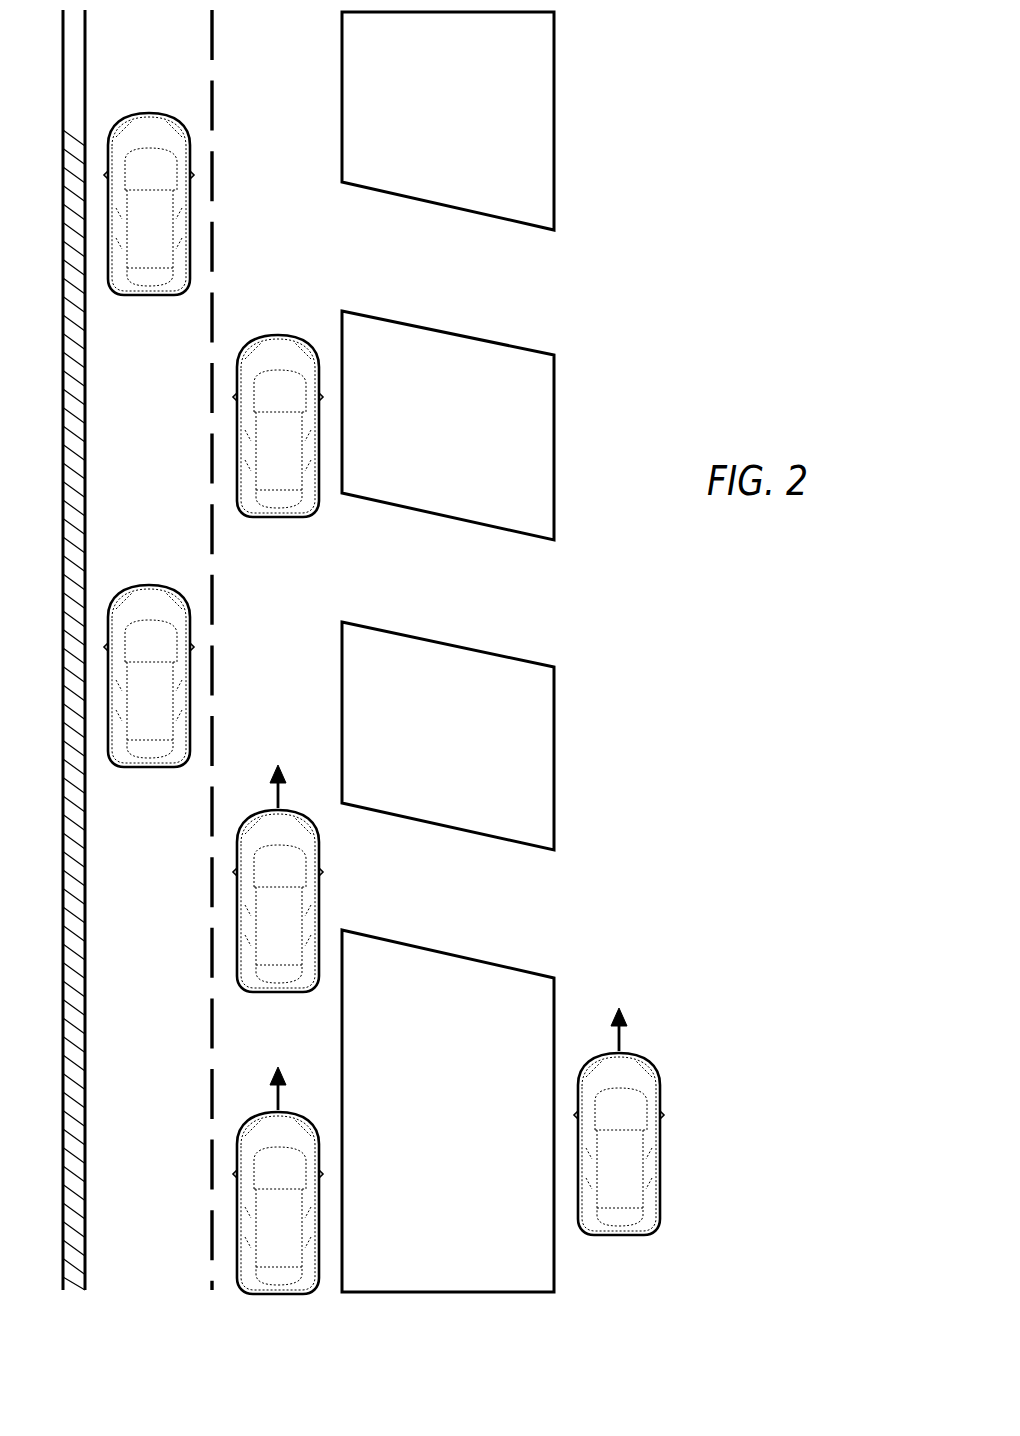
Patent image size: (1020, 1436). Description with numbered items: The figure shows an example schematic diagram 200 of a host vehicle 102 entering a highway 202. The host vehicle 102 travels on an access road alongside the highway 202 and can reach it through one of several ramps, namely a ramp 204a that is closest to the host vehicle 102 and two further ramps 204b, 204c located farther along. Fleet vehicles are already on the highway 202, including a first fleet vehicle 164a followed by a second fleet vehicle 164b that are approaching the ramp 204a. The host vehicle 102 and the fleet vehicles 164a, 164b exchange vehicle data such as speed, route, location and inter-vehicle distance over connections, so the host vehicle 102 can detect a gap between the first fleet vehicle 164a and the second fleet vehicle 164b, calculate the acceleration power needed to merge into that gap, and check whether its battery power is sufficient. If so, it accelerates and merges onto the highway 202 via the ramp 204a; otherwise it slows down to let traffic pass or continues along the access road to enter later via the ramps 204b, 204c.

The driving environment / scenario 200 is at (761, 433).
The highway 202 is at (282, 178).
The ramp 204a is at (514, 898).
The ramp 204b is at (514, 588).
The ramp 204c is at (512, 278).
The first fleet vehicle 164a is at (238, 883).
The second fleet vehicle 164b is at (238, 1192).
The host vehicle 102 is at (658, 1130).